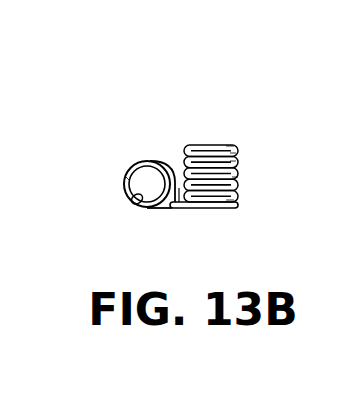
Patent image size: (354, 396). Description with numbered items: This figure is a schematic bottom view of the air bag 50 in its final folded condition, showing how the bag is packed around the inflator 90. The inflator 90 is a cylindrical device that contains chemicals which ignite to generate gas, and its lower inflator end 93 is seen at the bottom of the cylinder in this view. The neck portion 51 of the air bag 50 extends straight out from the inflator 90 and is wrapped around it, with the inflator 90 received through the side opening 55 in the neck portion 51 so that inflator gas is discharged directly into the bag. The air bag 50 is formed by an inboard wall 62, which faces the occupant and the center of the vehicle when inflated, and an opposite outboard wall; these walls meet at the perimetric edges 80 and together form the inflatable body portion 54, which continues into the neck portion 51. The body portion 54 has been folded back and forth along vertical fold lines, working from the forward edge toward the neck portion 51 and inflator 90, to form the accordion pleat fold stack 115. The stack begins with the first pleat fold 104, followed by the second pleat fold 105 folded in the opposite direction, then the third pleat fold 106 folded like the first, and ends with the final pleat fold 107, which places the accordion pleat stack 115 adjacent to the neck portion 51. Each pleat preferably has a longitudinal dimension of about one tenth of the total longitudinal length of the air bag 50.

The air bag 50 is at (160, 94).
The neck portion 51 is at (177, 195).
The inflatable body portion 54 is at (234, 141).
The side opening 55 is at (133, 205).
The inboard wall 62 is at (223, 210).
The perimetric edges 80 is at (176, 142).
The inflator 90 is at (130, 166).
The lower inflator end 93 is at (129, 180).
The first pleat fold 104 is at (212, 147).
The second pleat fold 105 is at (236, 153).
The third pleat fold 106 is at (236, 161).
The final pleat fold 107 is at (230, 200).
The accordion pleat fold stack 115 is at (243, 177).